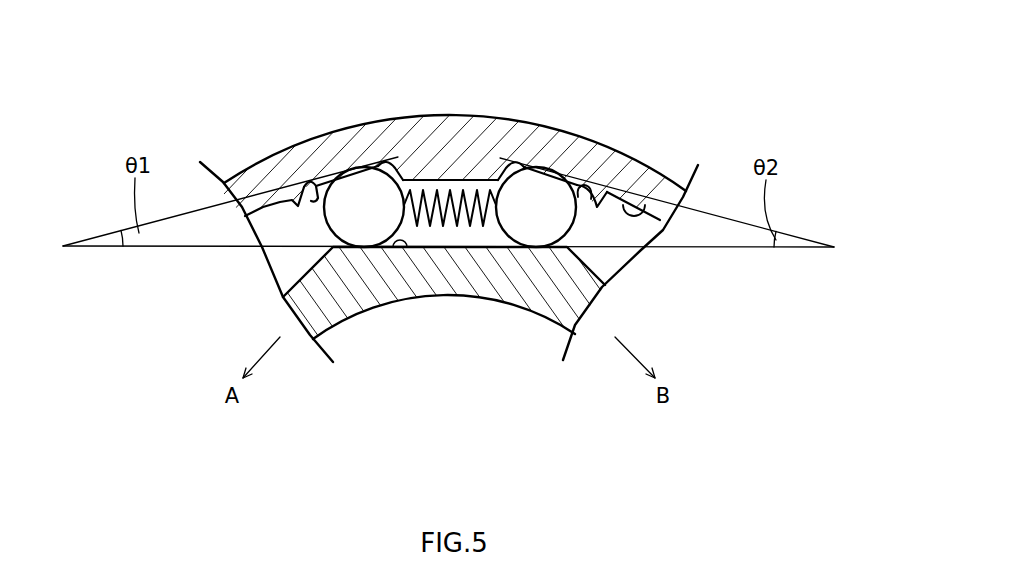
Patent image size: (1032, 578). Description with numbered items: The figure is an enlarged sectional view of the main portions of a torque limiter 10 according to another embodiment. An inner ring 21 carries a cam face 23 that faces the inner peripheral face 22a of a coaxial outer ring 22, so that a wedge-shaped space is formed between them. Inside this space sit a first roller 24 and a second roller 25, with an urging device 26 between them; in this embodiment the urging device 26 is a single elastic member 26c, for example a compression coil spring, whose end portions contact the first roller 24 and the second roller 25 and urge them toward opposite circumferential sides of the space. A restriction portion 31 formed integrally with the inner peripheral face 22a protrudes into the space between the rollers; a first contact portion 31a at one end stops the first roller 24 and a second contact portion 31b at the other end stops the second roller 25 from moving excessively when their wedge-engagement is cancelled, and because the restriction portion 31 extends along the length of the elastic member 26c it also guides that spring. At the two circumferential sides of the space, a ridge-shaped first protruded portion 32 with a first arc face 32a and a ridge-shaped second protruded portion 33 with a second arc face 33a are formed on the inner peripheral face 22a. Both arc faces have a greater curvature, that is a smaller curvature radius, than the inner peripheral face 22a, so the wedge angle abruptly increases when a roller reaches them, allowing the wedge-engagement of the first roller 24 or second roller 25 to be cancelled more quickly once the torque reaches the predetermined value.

The torque limiter 10 is at (652, 128).
The inner ring 21 is at (303, 272).
The outer ring 22 is at (567, 128).
The inner peripheral face of the outer ring 22a is at (657, 210).
The cam face 23 is at (393, 248).
The first roller 24 is at (360, 190).
The second roller 25 is at (540, 190).
The urging device 26 is at (450, 305).
The elastic member 26c is at (442, 224).
The restriction portion 31 is at (468, 187).
The first contact portion 31a is at (382, 163).
The second contact portion 31b is at (520, 165).
The first protruded portion 32 is at (290, 210).
The first arc face 32a is at (315, 187).
The second protruded portion 33 is at (607, 210).
The second arc face 33a is at (586, 186).